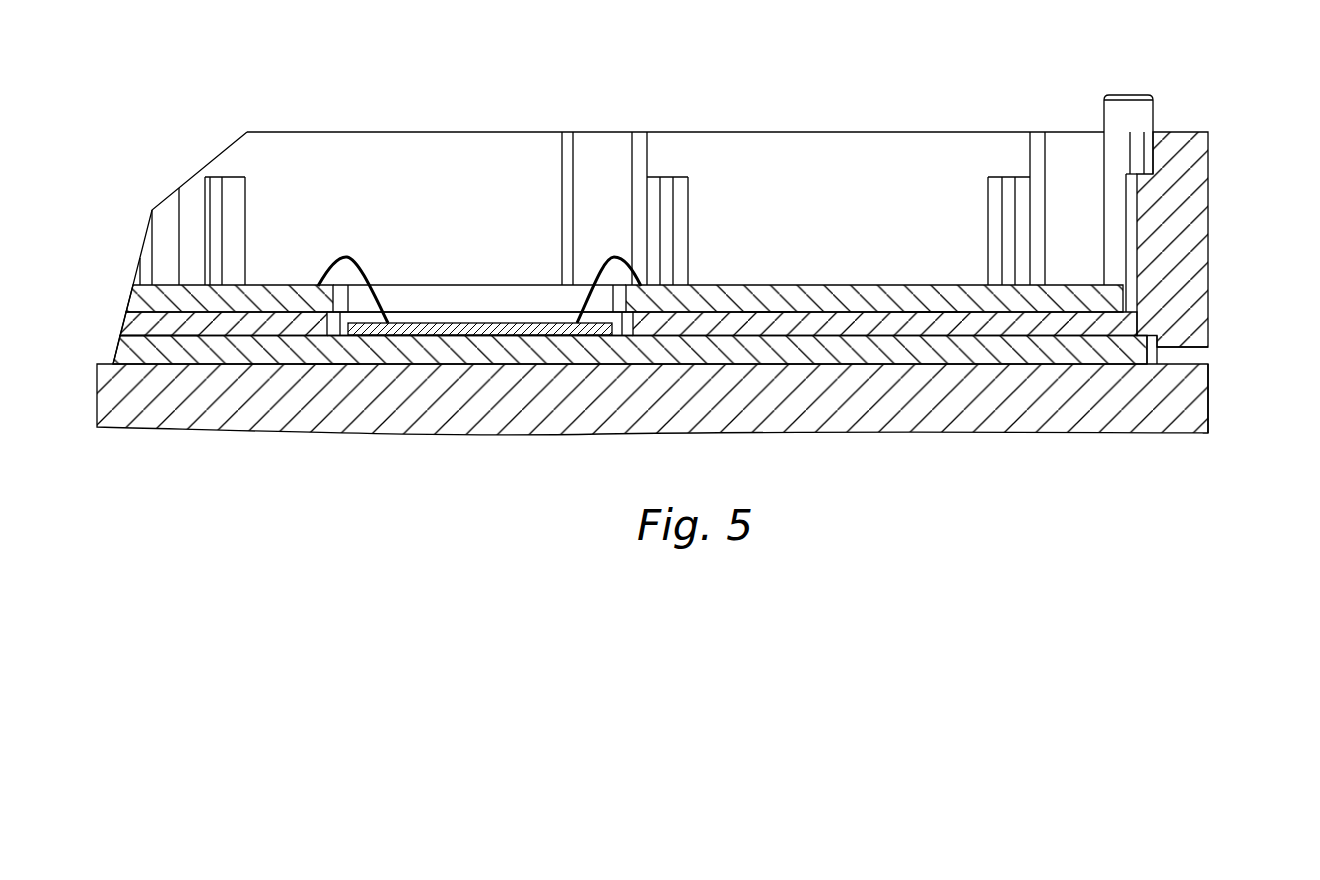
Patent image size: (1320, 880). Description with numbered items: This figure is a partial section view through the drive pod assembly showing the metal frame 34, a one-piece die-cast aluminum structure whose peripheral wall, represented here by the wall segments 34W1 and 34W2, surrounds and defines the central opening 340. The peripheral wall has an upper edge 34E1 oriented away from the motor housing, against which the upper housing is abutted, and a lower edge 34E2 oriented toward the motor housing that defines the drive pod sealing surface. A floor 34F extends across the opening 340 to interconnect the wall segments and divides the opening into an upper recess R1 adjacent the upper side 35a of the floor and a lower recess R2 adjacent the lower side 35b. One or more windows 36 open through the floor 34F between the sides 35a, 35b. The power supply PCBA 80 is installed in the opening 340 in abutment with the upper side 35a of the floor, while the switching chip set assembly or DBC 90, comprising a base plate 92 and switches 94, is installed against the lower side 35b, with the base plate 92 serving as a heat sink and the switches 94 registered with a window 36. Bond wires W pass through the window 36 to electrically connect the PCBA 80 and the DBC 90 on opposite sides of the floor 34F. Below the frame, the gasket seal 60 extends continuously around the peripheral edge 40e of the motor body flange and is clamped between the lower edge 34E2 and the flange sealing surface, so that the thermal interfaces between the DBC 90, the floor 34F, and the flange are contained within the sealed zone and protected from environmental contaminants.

The frame 34 is at (676, 211).
The upper edge 34E1 is at (1184, 132).
The lower edge 34E2 is at (1205, 351).
The floor 34F is at (857, 310).
The first wall segment 34W1 is at (1185, 258).
The second wall segment 34W2 is at (742, 170).
The central opening 340 is at (868, 170).
The upper side of floor 35a is at (763, 302).
The lower side of floor 35b is at (915, 335).
The window 36 is at (437, 302).
The peripheral edge of motor body flange 40e is at (1208, 398).
The seal 60 is at (1192, 352).
The power supply PCBA 80 is at (260, 283).
The switching chip set assembly (DBC) 90 is at (420, 350).
The base plate 92 is at (138, 350).
The switches 94 is at (478, 328).
The upper recess R1 is at (512, 168).
The lower recess R2 is at (327, 355).
The bond wires W is at (340, 258).